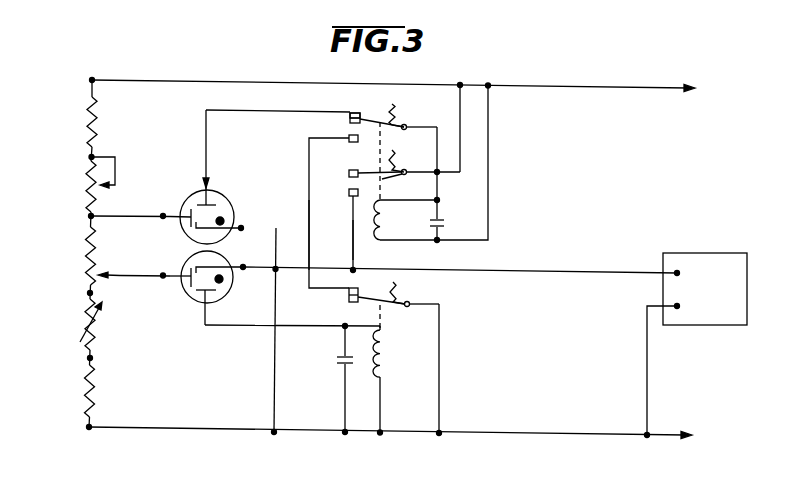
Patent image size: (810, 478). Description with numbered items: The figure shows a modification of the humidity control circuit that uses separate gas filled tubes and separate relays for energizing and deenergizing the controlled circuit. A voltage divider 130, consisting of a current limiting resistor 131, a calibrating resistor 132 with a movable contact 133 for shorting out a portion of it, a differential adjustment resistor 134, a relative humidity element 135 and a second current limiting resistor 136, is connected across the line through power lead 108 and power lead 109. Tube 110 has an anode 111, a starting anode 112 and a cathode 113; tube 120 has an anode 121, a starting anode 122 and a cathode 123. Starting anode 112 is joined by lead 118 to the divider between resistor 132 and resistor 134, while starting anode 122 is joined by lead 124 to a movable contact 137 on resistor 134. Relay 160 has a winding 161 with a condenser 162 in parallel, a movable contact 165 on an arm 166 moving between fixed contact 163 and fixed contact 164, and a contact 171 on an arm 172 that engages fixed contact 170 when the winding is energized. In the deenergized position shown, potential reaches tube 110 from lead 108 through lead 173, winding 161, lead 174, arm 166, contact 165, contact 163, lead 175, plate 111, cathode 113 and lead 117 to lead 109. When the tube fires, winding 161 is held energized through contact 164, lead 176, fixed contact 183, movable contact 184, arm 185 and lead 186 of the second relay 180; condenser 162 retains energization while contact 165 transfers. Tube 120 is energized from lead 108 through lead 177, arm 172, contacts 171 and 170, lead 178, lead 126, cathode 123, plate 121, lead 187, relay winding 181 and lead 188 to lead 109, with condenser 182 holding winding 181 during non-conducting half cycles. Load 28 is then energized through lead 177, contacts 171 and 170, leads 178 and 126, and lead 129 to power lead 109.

The load 28 is at (714, 253).
The power lead 108 is at (630, 87).
The power lead 109 is at (589, 436).
The tube 110 is at (232, 194).
The anode 111 is at (199, 194).
The starting anode 112 is at (186, 228).
The cathode 113 is at (233, 230).
The lead 117 is at (276, 376).
The lead 118 is at (138, 218).
The tube 120 is at (198, 306).
The anode 121 is at (218, 300).
The starting anode 122 is at (187, 284).
The cathode 123 is at (238, 266).
The lead 124 is at (125, 277).
The lead 126 is at (490, 275).
The lead 129 is at (646, 358).
The voltage divider 130 is at (171, 141).
The current limiting resistor 131 is at (96, 104).
The calibrating resistor 132 is at (93, 170).
The movable contact 133 is at (102, 188).
The differential adjustment resistor 134 is at (88, 252).
The relative humidity element 135 is at (97, 328).
The current limiting resistor 136 is at (96, 388).
The movable contact 137 is at (99, 273).
The relay 160 is at (444, 112).
The relay winding 161 is at (385, 216).
The condenser 162 is at (442, 222).
The fixed contact 163 is at (356, 113).
The fixed contact 164 is at (352, 142).
The movable contact 165 is at (349, 121).
The arm 166 is at (411, 127).
The fixed contact 170 is at (350, 194).
The contact 171 is at (349, 174).
The arm 172 is at (402, 176).
The lead 173 is at (489, 168).
The lead 174 is at (436, 147).
The lead 175 is at (238, 111).
The lead 176 is at (308, 226).
The lead 177 is at (460, 132).
The lead 178 is at (352, 234).
The relay 180 is at (430, 357).
The relay winding 181 is at (387, 370).
The condenser 182 is at (342, 368).
The fixed contact 183 is at (354, 289).
The movable contact 184 is at (351, 302).
The arm 185 is at (405, 307).
The lead 186 is at (440, 375).
The lead 187 is at (216, 327).
The lead 188 is at (381, 398).